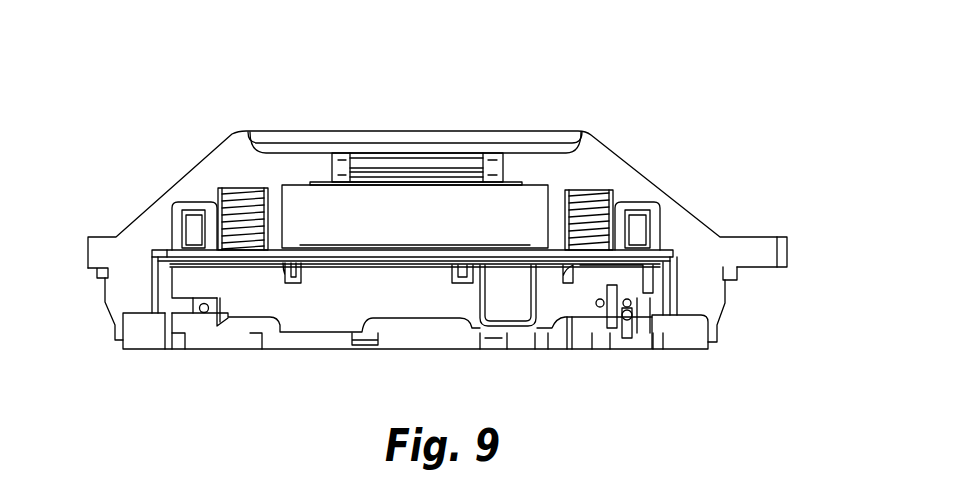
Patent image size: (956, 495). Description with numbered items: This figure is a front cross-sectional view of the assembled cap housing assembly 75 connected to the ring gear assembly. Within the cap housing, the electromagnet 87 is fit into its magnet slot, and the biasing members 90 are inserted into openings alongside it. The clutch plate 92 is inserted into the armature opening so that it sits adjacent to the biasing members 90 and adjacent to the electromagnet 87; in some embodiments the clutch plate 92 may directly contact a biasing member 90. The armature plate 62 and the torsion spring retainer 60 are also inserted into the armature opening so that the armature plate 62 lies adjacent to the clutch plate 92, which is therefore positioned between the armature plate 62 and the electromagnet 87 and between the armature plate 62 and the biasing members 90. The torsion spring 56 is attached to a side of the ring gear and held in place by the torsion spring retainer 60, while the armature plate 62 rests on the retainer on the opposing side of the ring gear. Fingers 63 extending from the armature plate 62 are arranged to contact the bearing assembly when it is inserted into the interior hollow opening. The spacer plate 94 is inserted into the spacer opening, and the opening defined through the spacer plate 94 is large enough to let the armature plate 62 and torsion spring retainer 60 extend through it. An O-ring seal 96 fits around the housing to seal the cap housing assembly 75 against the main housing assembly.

The cap housing assembly 75 is at (567, 113).
The biasing members 90 is at (237, 193).
The electromagnet 87 is at (197, 227).
The clutch plate 92 is at (168, 257).
The armature plate 62 is at (182, 268).
The torsion spring retainer 60 is at (185, 287).
The torsion spring 56 is at (204, 313).
The fingers 63 is at (295, 286).
The spacer plate 94 is at (678, 335).
The O-ring seal 96 is at (737, 274).